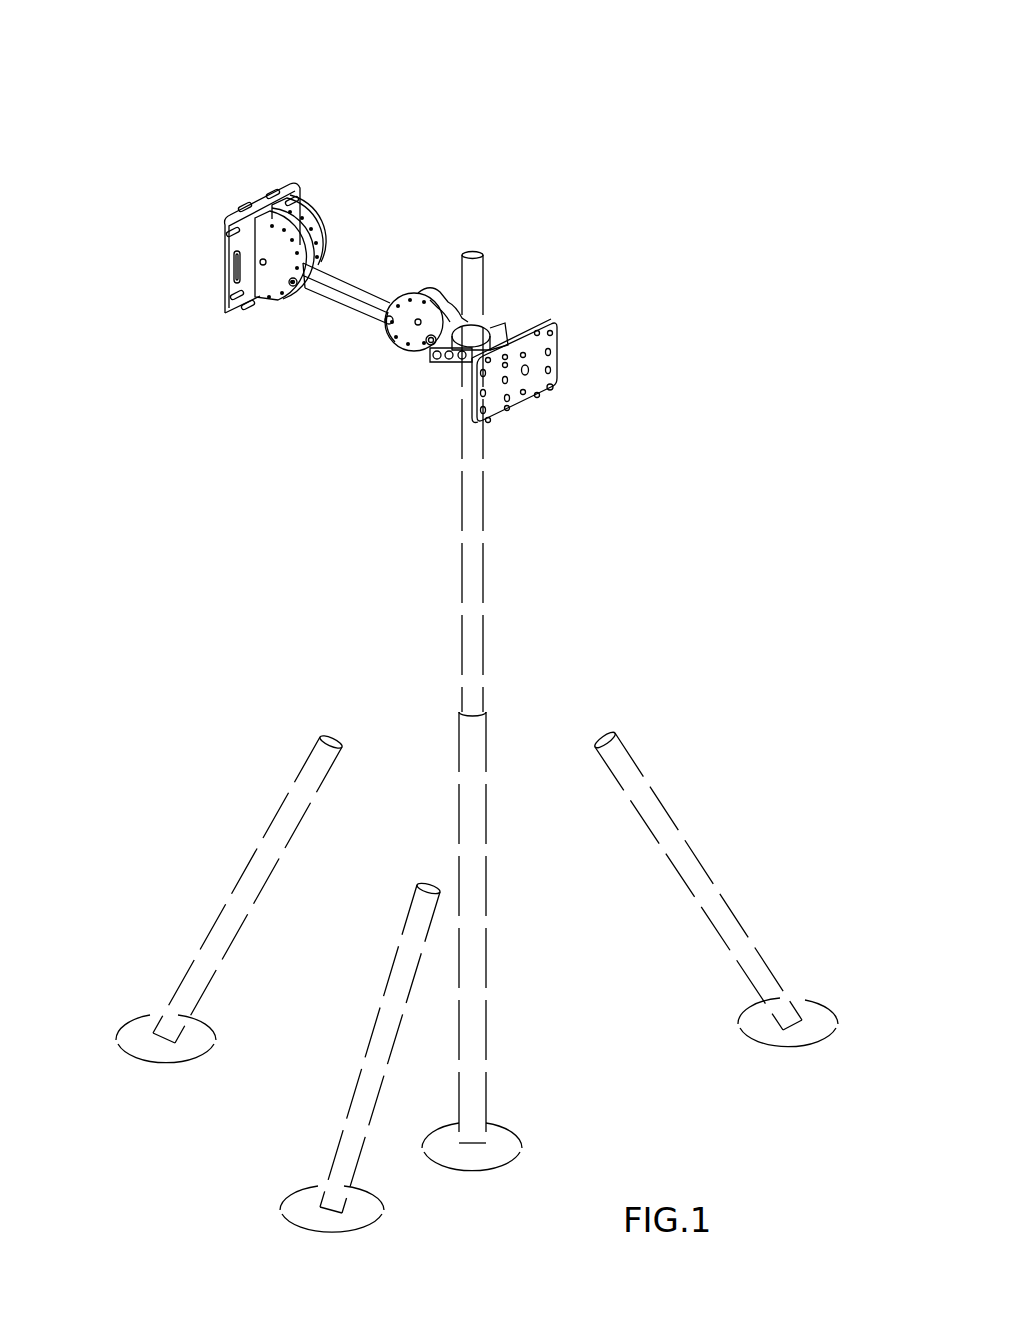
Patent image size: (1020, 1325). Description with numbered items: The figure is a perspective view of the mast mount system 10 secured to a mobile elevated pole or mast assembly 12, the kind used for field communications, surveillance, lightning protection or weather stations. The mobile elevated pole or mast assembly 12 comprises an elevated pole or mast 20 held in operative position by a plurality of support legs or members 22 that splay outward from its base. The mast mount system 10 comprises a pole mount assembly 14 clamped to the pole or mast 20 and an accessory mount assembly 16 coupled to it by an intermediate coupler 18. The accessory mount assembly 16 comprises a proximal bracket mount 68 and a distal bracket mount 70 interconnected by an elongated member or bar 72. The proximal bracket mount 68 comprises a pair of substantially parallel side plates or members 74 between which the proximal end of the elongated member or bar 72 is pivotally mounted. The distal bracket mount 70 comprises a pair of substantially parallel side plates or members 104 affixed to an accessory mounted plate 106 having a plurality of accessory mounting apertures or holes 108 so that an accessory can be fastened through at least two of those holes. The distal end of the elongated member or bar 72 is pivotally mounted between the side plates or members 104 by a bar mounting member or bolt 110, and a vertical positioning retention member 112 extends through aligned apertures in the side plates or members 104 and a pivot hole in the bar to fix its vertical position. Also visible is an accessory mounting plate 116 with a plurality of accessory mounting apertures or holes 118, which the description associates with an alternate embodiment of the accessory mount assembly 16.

The mast mount system 10 is at (422, 126).
The mobile elevated pole or mast assembly 12 is at (304, 621).
The pole mount assembly 14 is at (507, 292).
The accessory mount assembly 16 is at (245, 126).
The intermediate coupler 18 is at (524, 319).
The elevated pole or mast 20 is at (483, 647).
The support legs or members 22 is at (245, 865).
The proximal bracket mount 68 is at (412, 262).
The distal bracket mount 70 is at (256, 338).
The elongated member or bar 72 is at (343, 283).
The substantially parallel side plates or members 74 is at (424, 292).
The substantially parallel side plates or members 104 is at (288, 222).
The accessory mounted plate 106 is at (240, 245).
The accessory mounting apertures or holes 108 is at (237, 196).
The bar mounting member or bolt 110 is at (261, 266).
The vertical positioning retention member 112 is at (287, 293).
The accessory mounting plate 116 is at (498, 412).
The accessory mounting apertures or holes 118 is at (561, 383).